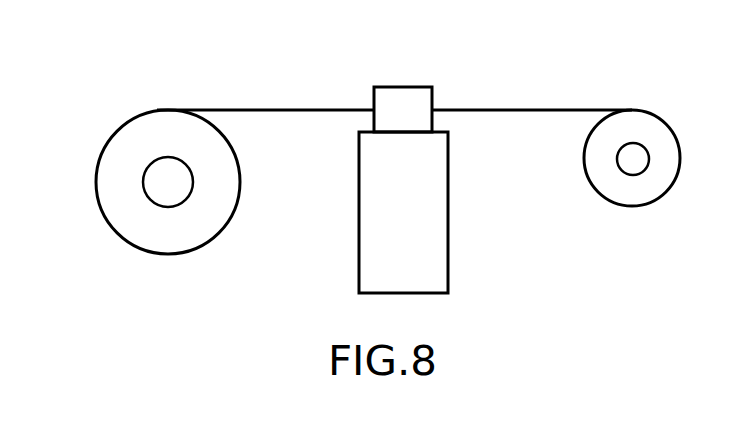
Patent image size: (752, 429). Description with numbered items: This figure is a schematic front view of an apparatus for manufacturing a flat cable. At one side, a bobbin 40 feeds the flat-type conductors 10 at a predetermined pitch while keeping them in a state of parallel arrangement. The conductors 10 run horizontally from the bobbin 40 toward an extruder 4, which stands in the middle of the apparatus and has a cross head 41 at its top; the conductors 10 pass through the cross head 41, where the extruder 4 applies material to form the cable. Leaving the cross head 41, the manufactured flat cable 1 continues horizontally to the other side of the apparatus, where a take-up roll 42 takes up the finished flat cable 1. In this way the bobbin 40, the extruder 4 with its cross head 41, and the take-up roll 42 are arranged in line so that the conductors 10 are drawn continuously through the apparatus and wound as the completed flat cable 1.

The flat cable 1 is at (267, 108).
The extruder 4 is at (359, 225).
The flat-type conductors 10 is at (520, 110).
The bobbin 40 is at (627, 206).
The cross head 41 is at (408, 86).
The take-up roll 42 is at (112, 135).